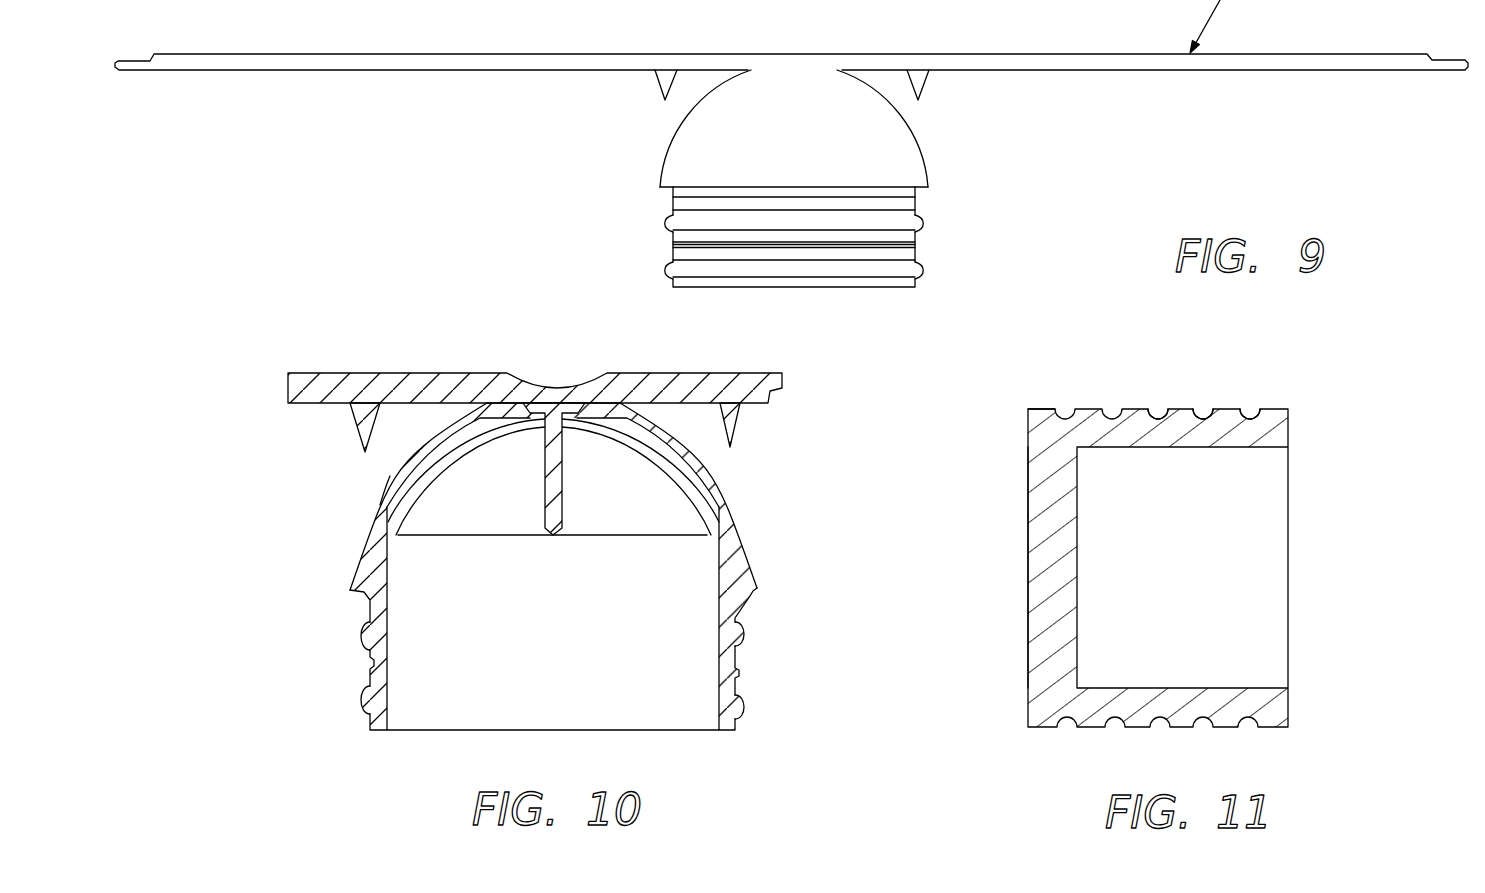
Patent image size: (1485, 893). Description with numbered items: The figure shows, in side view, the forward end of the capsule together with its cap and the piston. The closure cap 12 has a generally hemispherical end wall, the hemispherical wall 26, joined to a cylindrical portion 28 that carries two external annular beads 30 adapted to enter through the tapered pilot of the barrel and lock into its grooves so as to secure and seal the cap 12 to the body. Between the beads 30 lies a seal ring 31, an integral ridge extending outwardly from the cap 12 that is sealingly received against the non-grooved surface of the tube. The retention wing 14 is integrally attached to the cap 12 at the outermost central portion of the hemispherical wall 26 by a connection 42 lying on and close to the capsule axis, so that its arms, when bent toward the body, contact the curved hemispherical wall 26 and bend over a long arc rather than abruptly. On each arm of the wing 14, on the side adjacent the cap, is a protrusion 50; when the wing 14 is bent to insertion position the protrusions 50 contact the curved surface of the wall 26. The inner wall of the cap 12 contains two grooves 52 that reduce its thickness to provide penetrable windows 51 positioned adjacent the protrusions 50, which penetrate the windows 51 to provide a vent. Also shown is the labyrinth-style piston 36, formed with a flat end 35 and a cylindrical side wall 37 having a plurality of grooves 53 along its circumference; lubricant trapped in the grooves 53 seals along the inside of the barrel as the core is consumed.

In FIG. 9, the closure cap 12 is at (660, 163).
In FIG. 10, the closure cap 12 is at (757, 563).
In FIG. 10, the retention wing 14 is at (341, 372).
In FIG. 9, the hemispherical wall 26 is at (913, 136).
In FIG. 10, the hemispherical wall 26 is at (724, 484).
In FIG. 9, the cylindrical portion 28 is at (672, 203).
In FIG. 10, the cylindrical portion 28 is at (370, 617).
In FIG. 9, the annular beads 30 is at (920, 267).
In FIG. 10, the annular beads 30 is at (748, 712).
In FIG. 9, the seal ring 31 is at (805, 248).
In FIG. 10, the seal ring 31 is at (372, 668).
In FIG. 11, the flat end 35 is at (1028, 578).
In FIG. 11, the piston 36 is at (1298, 533).
In FIG. 11, the cylindrical side wall 37 is at (1038, 408).
In FIG. 10, the connection 42 is at (485, 408).
In FIG. 9, the protrusions 50 is at (660, 88).
In FIG. 10, the protrusions 50 is at (360, 421).
In FIG. 10, the penetrable windows 51 is at (391, 476).
In FIG. 10, the grooves 52 is at (408, 494).
In FIG. 11, the grooves 53 is at (1250, 410).